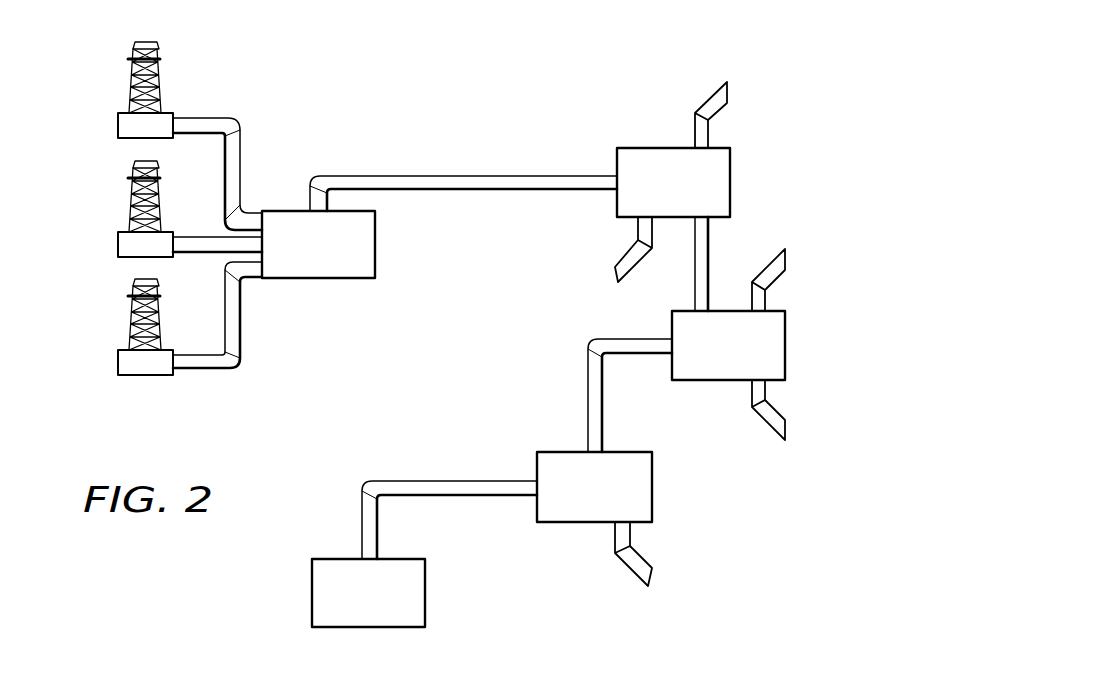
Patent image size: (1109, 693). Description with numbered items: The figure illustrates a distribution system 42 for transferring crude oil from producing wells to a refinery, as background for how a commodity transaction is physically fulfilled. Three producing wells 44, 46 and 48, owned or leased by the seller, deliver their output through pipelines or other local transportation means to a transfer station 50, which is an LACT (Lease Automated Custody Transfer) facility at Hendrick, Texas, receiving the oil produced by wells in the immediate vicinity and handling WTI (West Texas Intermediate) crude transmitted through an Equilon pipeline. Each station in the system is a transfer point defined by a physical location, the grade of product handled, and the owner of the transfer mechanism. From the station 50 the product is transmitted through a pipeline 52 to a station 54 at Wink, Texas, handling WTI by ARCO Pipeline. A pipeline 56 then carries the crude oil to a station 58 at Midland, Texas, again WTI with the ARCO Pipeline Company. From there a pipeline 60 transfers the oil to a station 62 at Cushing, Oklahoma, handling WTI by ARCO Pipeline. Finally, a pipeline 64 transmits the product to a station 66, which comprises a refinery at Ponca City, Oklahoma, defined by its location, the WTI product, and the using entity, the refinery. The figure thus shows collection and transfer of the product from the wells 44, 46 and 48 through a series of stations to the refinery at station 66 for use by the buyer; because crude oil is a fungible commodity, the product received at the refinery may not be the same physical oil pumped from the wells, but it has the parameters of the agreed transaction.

The distribution system 42 is at (337, 86).
The producing well 44 is at (118, 127).
The producing well 46 is at (118, 247).
The producing well 48 is at (118, 363).
The transfer station 50 is at (334, 257).
The pipeline 52 is at (470, 176).
The station 54 is at (690, 195).
The pipeline 56 is at (708, 255).
The station 58 is at (744, 358).
The pipeline 60 is at (588, 400).
The station 62 is at (611, 500).
The pipeline 64 is at (455, 480).
The station 66 is at (384, 606).